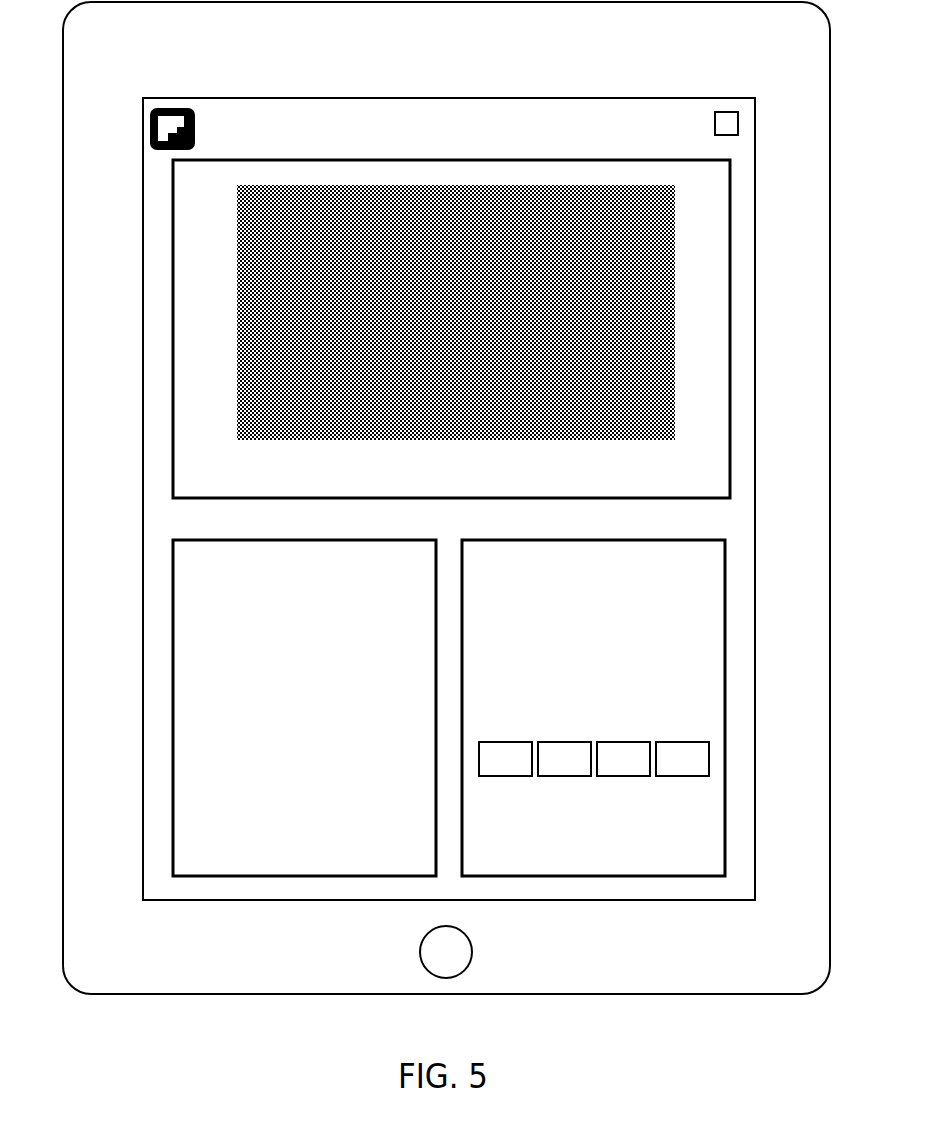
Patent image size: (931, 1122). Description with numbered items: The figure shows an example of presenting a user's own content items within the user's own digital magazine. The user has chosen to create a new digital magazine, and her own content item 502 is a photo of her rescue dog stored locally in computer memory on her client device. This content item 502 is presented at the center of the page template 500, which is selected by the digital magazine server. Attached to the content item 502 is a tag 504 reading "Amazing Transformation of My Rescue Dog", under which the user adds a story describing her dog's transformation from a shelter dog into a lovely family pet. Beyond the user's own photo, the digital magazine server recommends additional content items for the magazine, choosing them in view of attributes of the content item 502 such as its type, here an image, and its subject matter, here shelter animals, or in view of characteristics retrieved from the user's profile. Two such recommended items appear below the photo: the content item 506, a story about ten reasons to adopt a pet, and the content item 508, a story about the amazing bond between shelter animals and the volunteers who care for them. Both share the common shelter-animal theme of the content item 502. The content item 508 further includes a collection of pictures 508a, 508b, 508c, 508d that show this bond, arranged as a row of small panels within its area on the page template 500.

The page template 500 is at (448, 98).
The content item 502 is at (236, 340).
The tag 504 is at (212, 458).
The content item 506 is at (172, 655).
The content item 508 is at (600, 877).
The picture 508a is at (505, 759).
The picture 508b is at (564, 759).
The picture 508c is at (623, 759).
The picture 508d is at (682, 759).